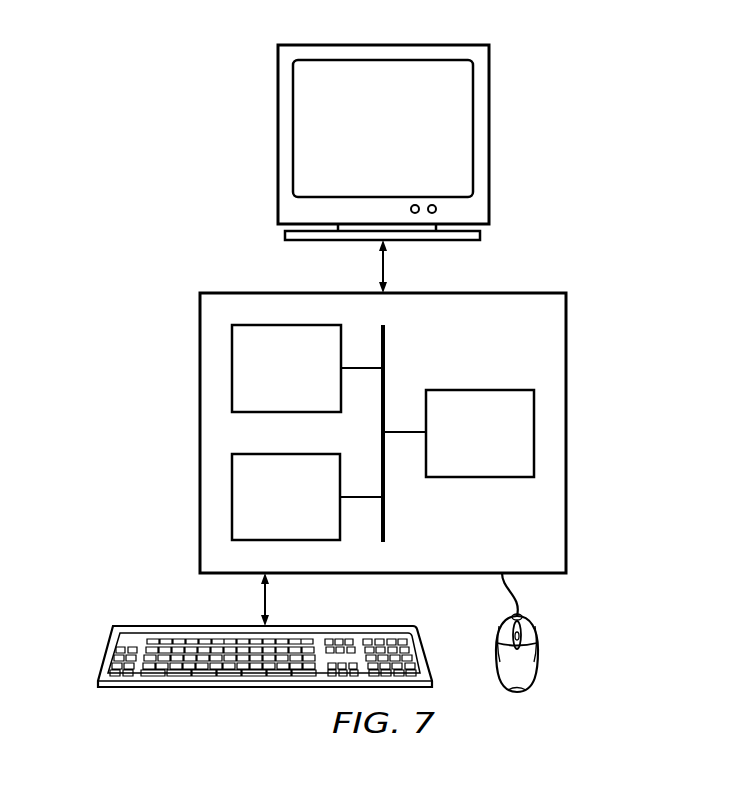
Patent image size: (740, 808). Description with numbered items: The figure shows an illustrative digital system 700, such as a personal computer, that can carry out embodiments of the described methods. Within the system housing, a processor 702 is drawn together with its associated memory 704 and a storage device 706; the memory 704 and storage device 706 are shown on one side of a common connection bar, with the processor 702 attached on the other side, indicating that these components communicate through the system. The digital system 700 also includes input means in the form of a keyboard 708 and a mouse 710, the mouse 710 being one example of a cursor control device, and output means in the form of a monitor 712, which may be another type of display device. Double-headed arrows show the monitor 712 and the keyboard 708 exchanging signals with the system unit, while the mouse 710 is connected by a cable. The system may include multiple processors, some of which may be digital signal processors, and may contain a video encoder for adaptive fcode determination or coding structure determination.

The digital system 700 is at (164, 127).
The processor 702 is at (499, 446).
The memory 704 is at (307, 381).
The storage device 706 is at (307, 511).
The keyboard 708 is at (103, 655).
The mouse 710 is at (538, 660).
The monitor 712 is at (489, 134).